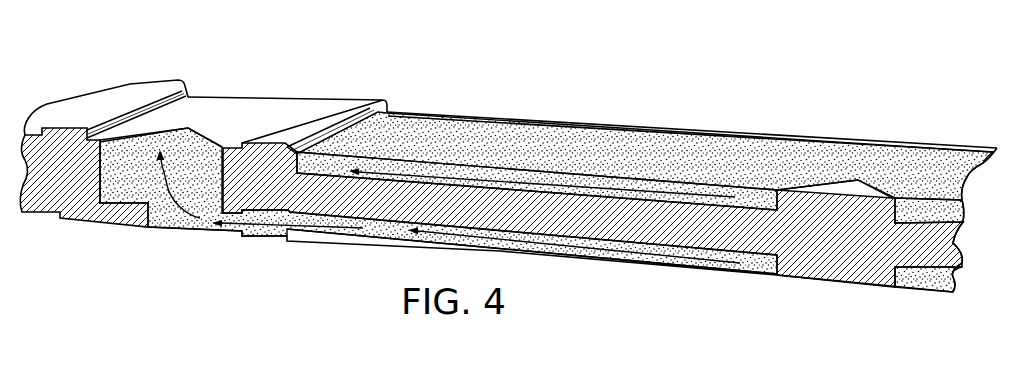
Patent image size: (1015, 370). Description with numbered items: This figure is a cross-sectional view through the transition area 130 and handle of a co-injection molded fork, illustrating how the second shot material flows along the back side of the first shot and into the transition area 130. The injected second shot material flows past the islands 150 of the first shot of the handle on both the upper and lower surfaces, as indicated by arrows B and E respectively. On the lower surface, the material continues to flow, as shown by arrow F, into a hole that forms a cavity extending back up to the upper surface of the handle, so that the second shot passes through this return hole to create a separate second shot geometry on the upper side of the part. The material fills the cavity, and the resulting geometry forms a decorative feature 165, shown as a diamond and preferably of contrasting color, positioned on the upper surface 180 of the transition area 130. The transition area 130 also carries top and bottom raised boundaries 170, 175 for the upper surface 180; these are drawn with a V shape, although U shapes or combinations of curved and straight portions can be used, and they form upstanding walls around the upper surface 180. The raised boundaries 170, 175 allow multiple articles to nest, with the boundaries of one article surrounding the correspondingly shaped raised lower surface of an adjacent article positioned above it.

The transition portion 130 is at (268, 86).
The islands 150 is at (835, 273).
The decorative feature 165 is at (167, 137).
The top raised boundary 170 is at (85, 113).
The bottom raised boundary 175 is at (323, 113).
The upper surface 180 is at (222, 122).
The arrow B is at (596, 188).
The arrow E is at (645, 257).
The arrow F is at (168, 230).